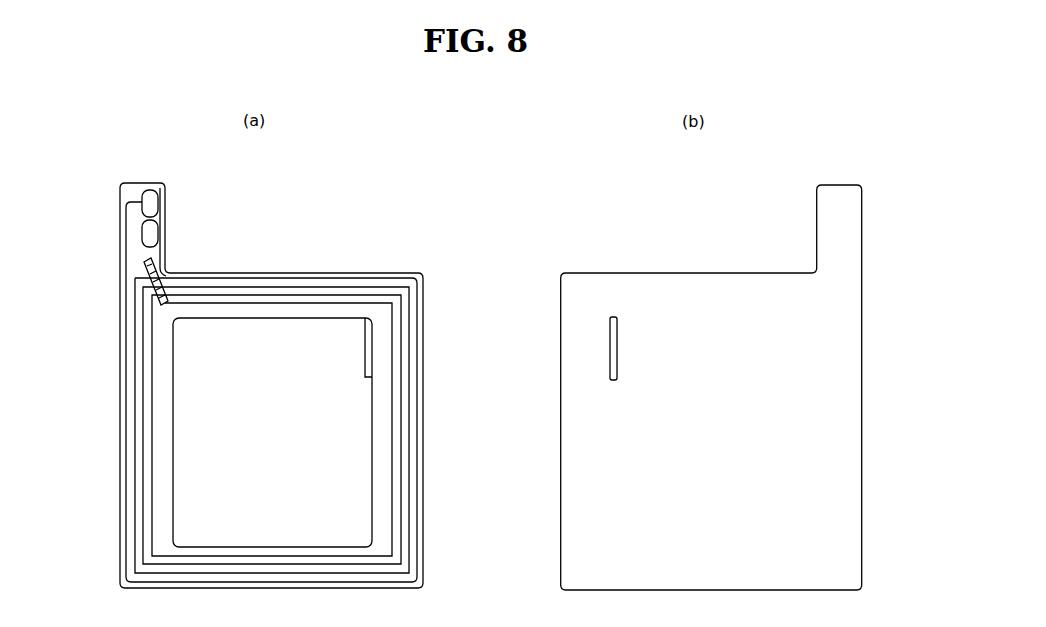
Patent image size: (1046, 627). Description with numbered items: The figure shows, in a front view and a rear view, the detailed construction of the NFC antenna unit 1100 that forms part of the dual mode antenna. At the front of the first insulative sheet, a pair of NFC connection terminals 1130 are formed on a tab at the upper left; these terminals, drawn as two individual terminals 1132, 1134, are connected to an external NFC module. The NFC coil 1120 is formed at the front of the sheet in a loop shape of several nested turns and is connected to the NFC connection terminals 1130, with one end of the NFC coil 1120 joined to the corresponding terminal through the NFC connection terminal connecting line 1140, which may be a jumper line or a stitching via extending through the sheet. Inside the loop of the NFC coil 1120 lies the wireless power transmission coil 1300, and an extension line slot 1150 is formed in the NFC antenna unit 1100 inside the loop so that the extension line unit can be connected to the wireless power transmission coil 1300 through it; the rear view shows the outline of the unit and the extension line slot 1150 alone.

The NFC antenna unit 1100 is at (118, 140).
The NFC coil 1120 is at (410, 412).
The NFC connection terminals 1130 is at (215, 221).
The first electrode tab 1132 is at (160, 208).
The second electrode tab 1134 is at (160, 240).
The NFC connection terminal connecting line 1140 is at (146, 265).
The extension line slot 1150 is at (372, 329).
The wireless power transmission coil 1300 is at (355, 452).